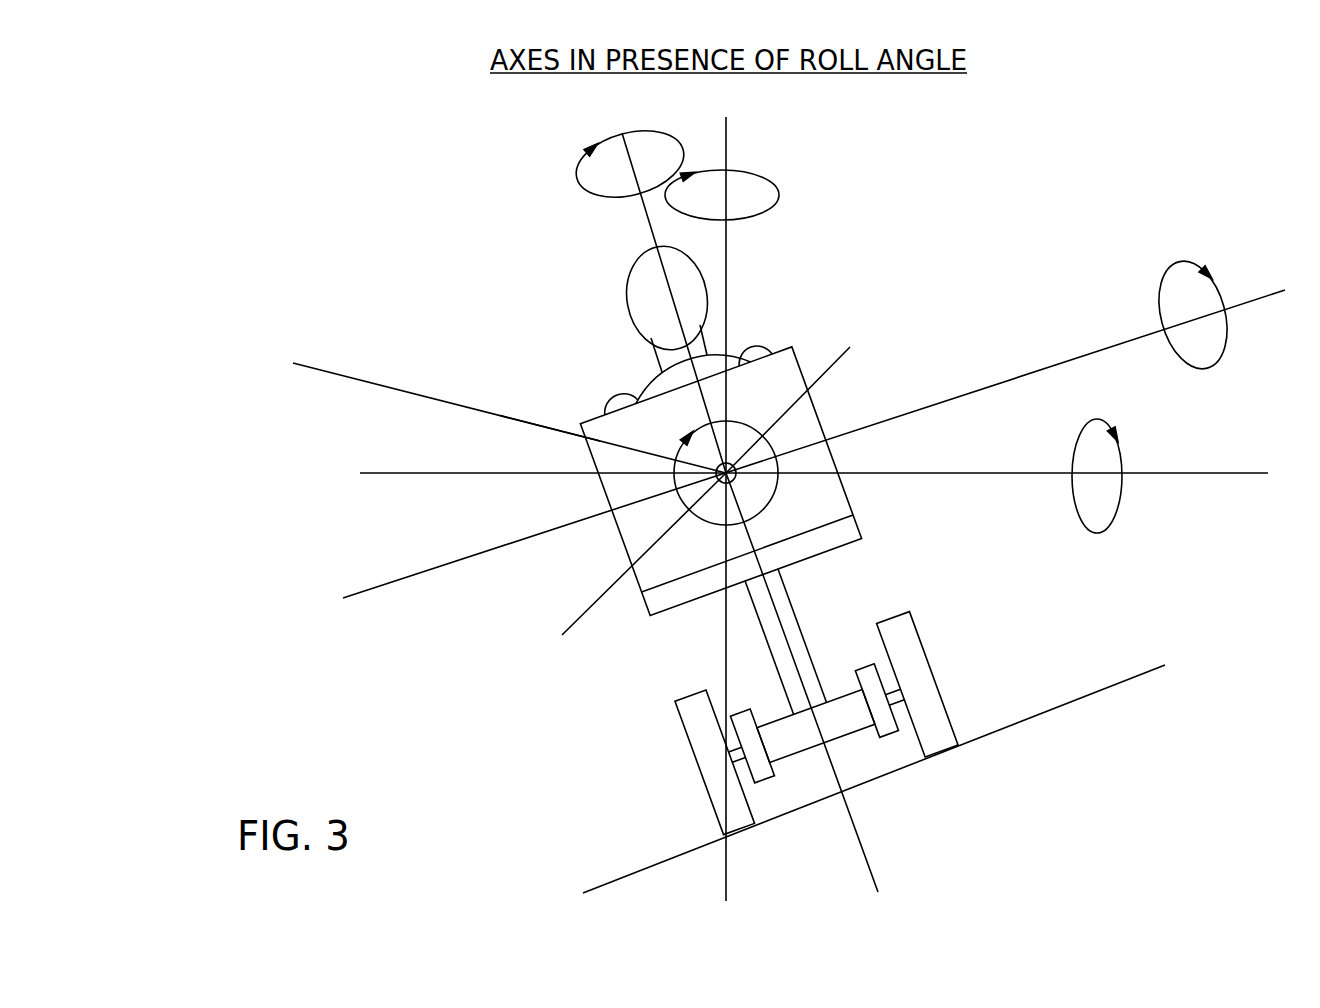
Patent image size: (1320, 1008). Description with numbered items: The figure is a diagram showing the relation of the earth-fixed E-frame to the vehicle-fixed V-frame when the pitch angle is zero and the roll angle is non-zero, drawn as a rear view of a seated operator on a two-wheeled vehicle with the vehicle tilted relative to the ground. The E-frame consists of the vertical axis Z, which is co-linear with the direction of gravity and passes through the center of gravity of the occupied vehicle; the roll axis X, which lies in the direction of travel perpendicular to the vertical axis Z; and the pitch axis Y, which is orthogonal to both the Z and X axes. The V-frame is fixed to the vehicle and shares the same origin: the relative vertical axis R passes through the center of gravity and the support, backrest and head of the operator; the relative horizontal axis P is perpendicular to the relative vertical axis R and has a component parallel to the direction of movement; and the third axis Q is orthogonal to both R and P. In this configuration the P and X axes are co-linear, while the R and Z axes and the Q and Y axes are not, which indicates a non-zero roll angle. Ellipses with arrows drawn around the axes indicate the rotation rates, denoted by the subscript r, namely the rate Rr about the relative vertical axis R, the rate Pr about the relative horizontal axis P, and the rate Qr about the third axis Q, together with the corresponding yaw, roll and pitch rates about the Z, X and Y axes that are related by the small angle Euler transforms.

The relative horizontal axis P is at (434, 413).
The rotation rate about the relative horizontal axis Pr is at (550, 419).
The third axis Q is at (811, 444).
The rotation rate about the third axis Qr is at (1223, 338).
The relative vertical axis R is at (762, 521).
The rotation rate about the relative vertical axis Rr is at (593, 193).
The roll axis X is at (630, 567).
The pitch axis Y is at (829, 475).
The vertical axis Z is at (738, 514).